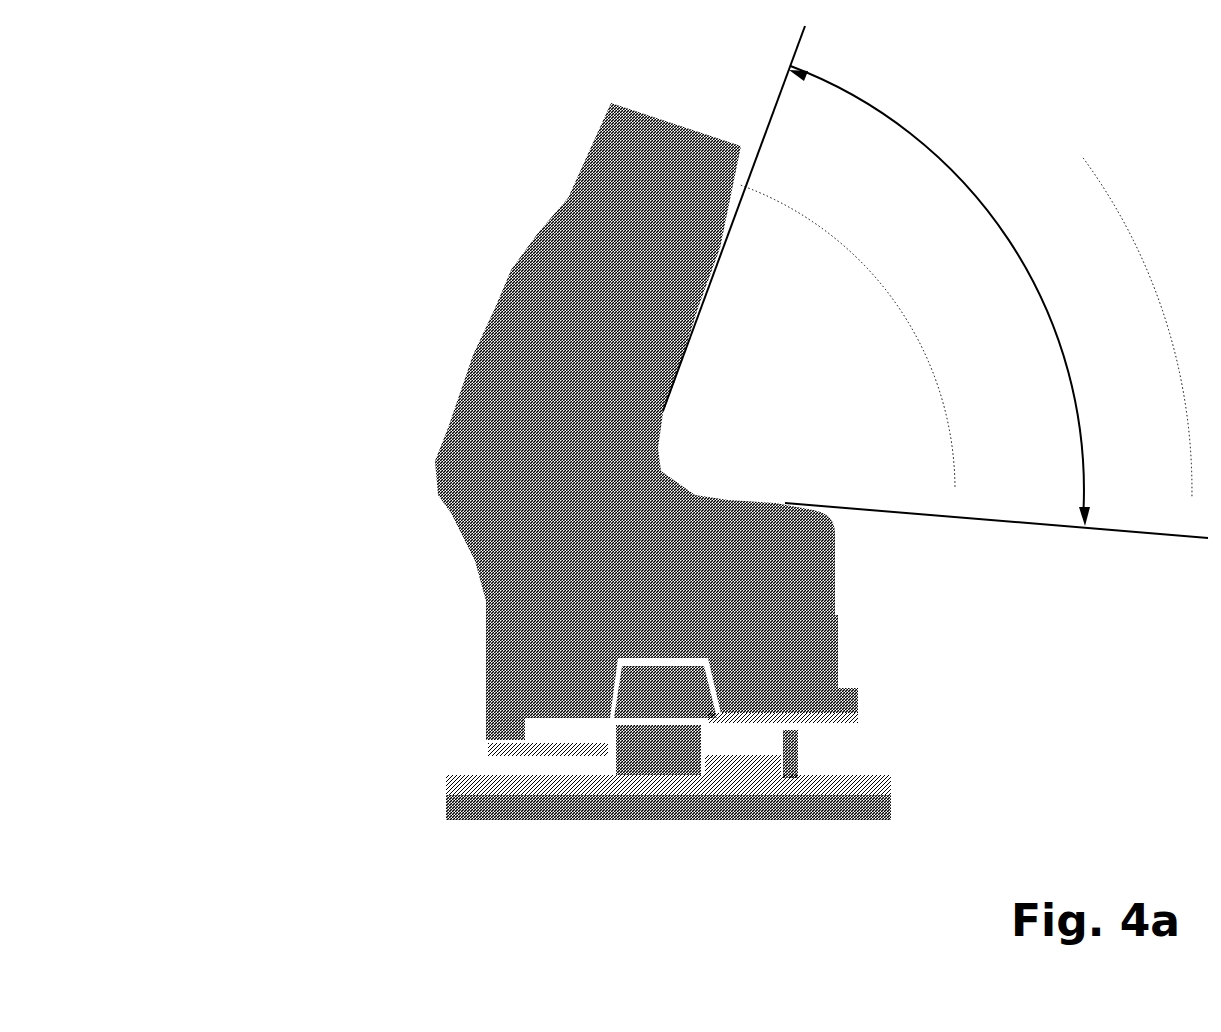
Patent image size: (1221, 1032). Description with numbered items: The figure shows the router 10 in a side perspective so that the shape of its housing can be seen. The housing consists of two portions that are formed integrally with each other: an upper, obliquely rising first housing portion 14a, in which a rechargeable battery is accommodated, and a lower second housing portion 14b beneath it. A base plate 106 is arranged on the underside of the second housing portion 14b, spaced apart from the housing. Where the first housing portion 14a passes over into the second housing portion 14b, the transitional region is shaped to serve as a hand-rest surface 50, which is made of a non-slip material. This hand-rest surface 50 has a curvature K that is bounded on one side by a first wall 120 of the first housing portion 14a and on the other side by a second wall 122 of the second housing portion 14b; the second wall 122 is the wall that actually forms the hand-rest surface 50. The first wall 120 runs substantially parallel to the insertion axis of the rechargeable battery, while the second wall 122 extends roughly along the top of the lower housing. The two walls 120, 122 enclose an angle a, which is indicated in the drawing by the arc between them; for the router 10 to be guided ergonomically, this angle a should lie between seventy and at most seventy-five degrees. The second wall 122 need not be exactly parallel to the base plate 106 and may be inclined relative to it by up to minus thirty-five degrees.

The router 10 is at (622, 461).
The first housing portion 14a is at (562, 224).
The second housing portion 14b is at (763, 585).
The hand-rest surface 50 is at (655, 458).
The curvature K is at (648, 438).
The base plate 106 is at (860, 800).
The first wall 120 is at (700, 295).
The second wall 122 is at (777, 495).
The angle a is at (966, 296).